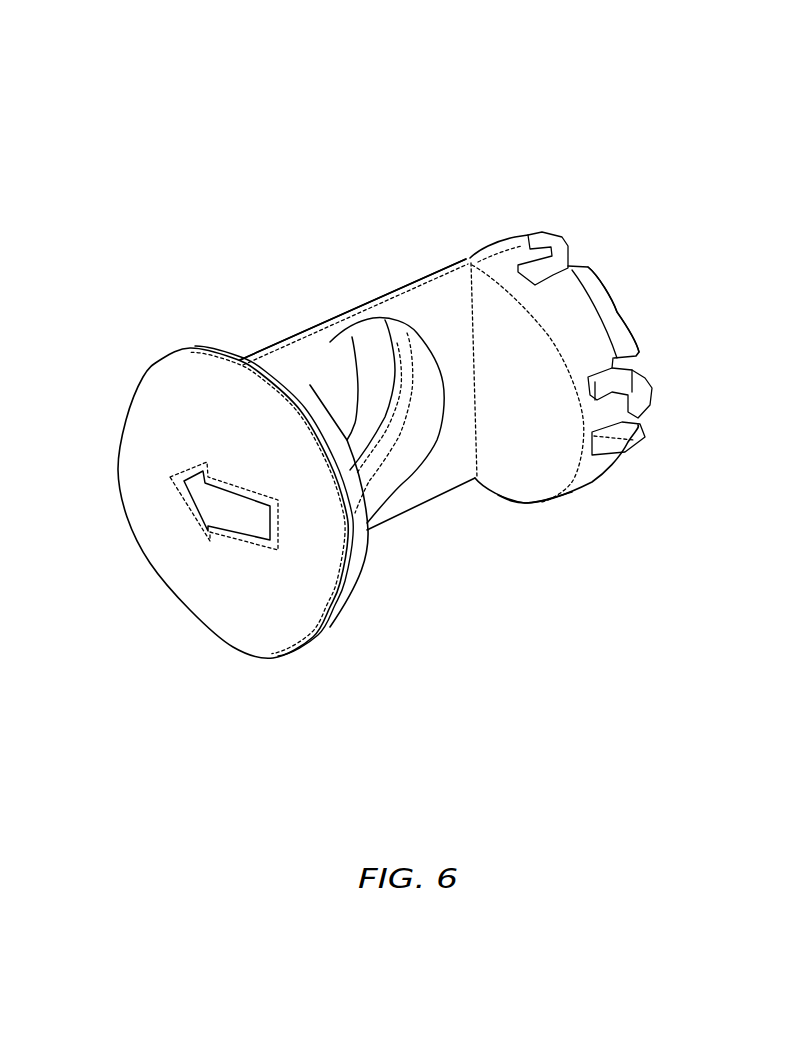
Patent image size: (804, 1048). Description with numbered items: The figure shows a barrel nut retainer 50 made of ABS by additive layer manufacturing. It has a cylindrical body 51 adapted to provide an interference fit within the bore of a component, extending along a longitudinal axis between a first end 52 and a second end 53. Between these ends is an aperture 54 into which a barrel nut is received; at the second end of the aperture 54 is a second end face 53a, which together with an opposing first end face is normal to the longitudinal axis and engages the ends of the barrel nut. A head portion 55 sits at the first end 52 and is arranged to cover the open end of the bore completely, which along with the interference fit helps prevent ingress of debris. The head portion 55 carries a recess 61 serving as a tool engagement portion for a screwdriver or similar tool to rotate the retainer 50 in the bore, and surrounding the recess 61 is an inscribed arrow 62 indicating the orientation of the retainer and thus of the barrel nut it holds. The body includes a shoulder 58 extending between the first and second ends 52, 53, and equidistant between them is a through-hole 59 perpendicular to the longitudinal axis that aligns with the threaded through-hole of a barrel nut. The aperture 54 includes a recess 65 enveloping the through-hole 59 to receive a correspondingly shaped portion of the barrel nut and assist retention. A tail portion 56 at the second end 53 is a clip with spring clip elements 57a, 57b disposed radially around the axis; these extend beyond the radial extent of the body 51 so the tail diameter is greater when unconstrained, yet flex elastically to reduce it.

The barrel nut retainer 50 is at (676, 120).
The cylindrical body 51 is at (432, 302).
The first end 52 is at (360, 550).
The second end 53 is at (600, 467).
The second end face 53a is at (553, 452).
The aperture 54 is at (313, 347).
The head portion 55 is at (185, 585).
The tail portion 56 is at (598, 325).
The spring clip element 57a is at (541, 232).
The spring clip element 57b is at (648, 407).
The shoulder 58 is at (457, 470).
The through-hole 59 is at (377, 372).
The recess 61 is at (237, 503).
The inscribed arrow 62 is at (180, 473).
The recess 65 is at (404, 470).